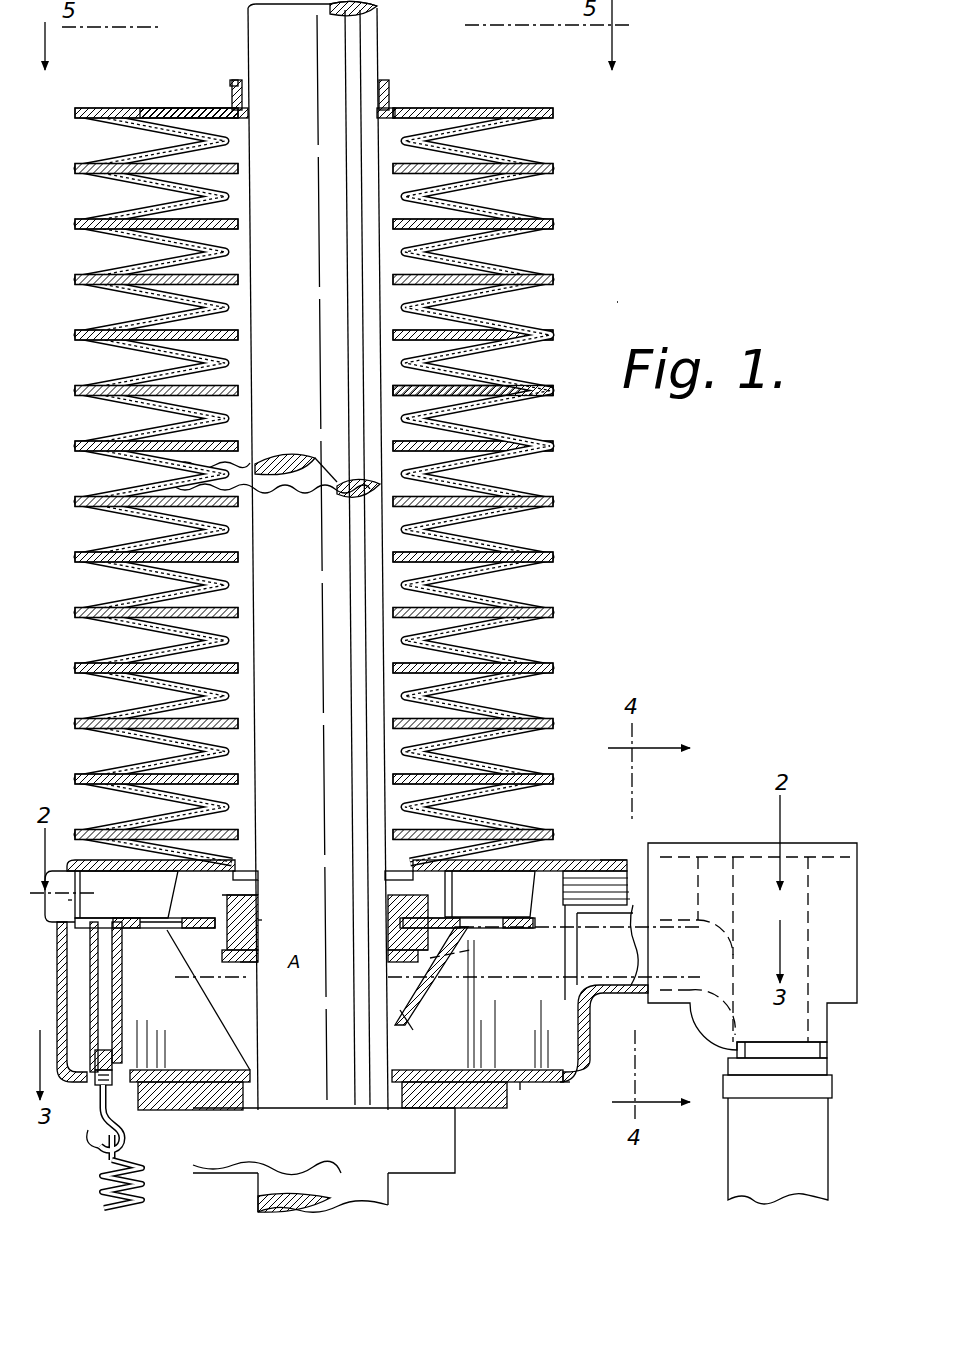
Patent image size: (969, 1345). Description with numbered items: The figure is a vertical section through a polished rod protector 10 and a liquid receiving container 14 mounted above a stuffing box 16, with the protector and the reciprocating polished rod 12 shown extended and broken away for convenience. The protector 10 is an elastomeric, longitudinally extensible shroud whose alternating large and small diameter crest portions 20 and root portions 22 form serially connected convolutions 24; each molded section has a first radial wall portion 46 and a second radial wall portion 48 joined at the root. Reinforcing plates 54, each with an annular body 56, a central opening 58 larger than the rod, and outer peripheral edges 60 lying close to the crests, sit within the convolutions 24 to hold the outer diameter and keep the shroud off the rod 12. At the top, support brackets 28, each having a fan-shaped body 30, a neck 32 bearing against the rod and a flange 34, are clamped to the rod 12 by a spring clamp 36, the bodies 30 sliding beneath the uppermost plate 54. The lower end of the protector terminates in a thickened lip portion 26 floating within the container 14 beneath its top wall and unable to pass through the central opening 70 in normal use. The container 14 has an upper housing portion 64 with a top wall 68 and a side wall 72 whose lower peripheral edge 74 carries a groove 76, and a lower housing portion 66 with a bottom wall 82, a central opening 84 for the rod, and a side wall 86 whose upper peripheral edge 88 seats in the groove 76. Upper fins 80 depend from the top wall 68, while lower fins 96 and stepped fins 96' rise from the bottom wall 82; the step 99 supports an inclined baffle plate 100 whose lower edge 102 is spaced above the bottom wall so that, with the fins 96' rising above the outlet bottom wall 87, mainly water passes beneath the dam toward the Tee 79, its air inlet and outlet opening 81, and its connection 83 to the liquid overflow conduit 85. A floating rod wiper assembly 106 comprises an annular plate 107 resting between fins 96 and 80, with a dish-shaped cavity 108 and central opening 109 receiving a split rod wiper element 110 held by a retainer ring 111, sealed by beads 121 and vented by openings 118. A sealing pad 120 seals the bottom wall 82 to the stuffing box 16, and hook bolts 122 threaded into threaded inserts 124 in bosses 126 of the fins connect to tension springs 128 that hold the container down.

The polished rod protector 10 is at (617, 302).
The polished rod 12 is at (338, 454).
The liquid receiving container 14 is at (520, 1092).
The stuffing box 16 is at (430, 1180).
The crest portions 20 is at (556, 446).
The root portions 22 is at (240, 198).
The convolutions 24 is at (570, 215).
The lip portion 26 is at (126, 894).
The support brackets 28 is at (438, 110).
The fan-shaped body 30 is at (180, 110).
The neck 32 is at (233, 102).
The flange 34 is at (234, 78).
The spring clamp 36 is at (386, 92).
The first radial wall portion 46 is at (130, 624).
The second radial wall portion 48 is at (150, 603).
The reinforcing plates 54 is at (240, 163).
The annular body 56 is at (482, 276).
The central opening 58 is at (240, 226).
The outer peripheral edges 60 is at (556, 390).
The upper housing portion 64 is at (600, 840).
The lower housing portion 66 is at (577, 1090).
The top wall 68 is at (510, 866).
The central opening 70 is at (240, 870).
The side wall 72 is at (80, 870).
The lower peripheral edge 74 is at (67, 955).
The groove 76 is at (98, 940).
The Tee 79 is at (731, 842).
The upper fins 80 is at (110, 880).
The air inlet and outlet opening 81 is at (810, 858).
The bottom wall 82 is at (525, 1085).
The connection 83 is at (734, 1052).
The central opening 84 is at (253, 1072).
The liquid overflow conduit 85 is at (728, 1148).
The side wall 86 is at (122, 1003).
The bottom wall of the outlet 87 is at (614, 976).
The upper peripheral edge 88 is at (80, 905).
The lower fins 96 is at (232, 1000).
The stepped lower fins 96' is at (508, 1004).
The step 99 is at (475, 951).
The baffle plate 100 is at (438, 978).
The lower edge 102 is at (410, 1025).
The floating rod wiper assembly 106 is at (241, 965).
The annular plate 107 is at (178, 908).
The dish-shaped cavity 108 is at (225, 940).
The central opening 109 is at (385, 958).
The rod wiper element 110 is at (385, 920).
The retainer ring 111 is at (385, 872).
The openings 118 is at (150, 918).
The sealing pad 120 is at (165, 1110).
The beads 121 is at (245, 895).
The hook bolts 122 is at (95, 1150).
The threaded inserts 124 is at (112, 1055).
The bosses 126 is at (112, 1022).
The tension springs 128 is at (107, 1196).